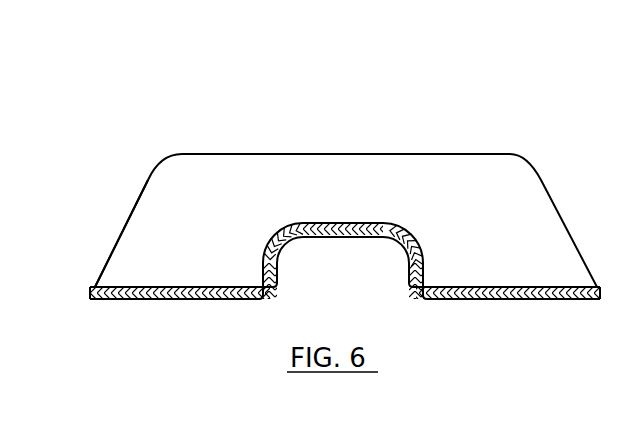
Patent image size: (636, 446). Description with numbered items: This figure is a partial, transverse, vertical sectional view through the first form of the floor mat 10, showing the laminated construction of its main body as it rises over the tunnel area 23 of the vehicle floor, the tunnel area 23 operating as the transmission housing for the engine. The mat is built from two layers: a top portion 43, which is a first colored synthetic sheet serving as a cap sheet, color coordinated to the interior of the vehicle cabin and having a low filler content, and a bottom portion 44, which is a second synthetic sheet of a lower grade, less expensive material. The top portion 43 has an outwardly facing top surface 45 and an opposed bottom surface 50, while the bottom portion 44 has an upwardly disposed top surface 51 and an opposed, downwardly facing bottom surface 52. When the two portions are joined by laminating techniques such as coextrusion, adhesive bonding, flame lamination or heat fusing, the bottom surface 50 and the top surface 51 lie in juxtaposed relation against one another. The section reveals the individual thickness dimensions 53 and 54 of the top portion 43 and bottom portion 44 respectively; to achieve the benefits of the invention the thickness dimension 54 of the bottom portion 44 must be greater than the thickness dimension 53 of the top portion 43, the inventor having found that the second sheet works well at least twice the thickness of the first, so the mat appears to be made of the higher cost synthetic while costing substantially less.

The floor mat 10 is at (560, 205).
The tunnel area 23 is at (343, 211).
The top portion 43 is at (472, 175).
The bottom portion 44 is at (500, 300).
The top surface 45 is at (157, 214).
The bottom surface 50 is at (162, 290).
The top surface 51 is at (98, 283).
The bottom surface 52 is at (168, 300).
The thickness dimension 53 is at (315, 223).
The thickness dimension 54 is at (352, 237).